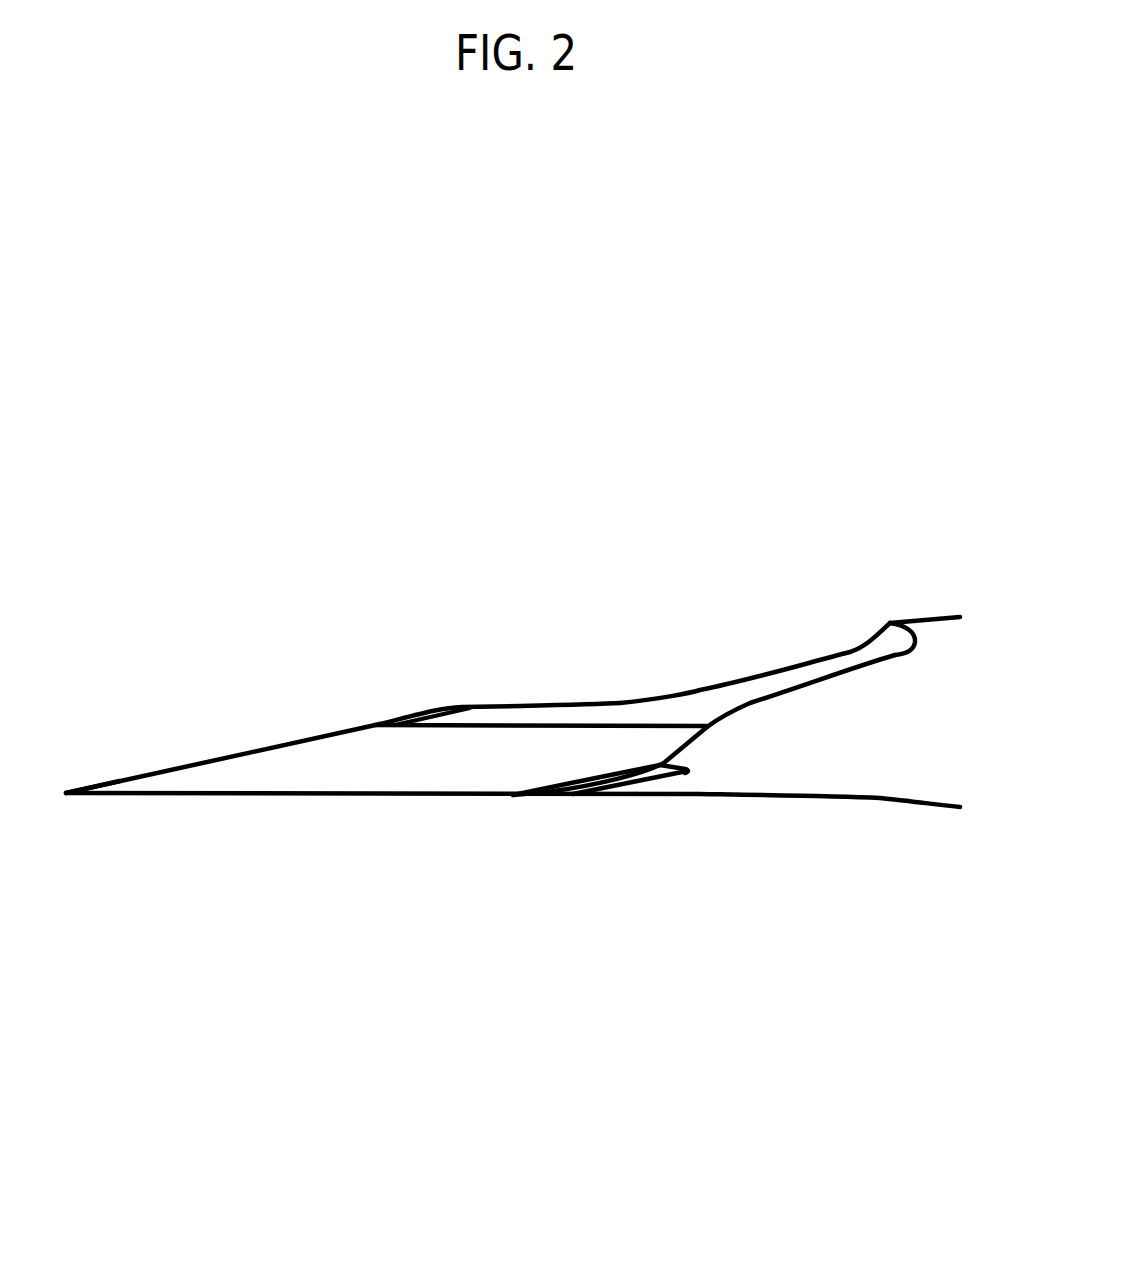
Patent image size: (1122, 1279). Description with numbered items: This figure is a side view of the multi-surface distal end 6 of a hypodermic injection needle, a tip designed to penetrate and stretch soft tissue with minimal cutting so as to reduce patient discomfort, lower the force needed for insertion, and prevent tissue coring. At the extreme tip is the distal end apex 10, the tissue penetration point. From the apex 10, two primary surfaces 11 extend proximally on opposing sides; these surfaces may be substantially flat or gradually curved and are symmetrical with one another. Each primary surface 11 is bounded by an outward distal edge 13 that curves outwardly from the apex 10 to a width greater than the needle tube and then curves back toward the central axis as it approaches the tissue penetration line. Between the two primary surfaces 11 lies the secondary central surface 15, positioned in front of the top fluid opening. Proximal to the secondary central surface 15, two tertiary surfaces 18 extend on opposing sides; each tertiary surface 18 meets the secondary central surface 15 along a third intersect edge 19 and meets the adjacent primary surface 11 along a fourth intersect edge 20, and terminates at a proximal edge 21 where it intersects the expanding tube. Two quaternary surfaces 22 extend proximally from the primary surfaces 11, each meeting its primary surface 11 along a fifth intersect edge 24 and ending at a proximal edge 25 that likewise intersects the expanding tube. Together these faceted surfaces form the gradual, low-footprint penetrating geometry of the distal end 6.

The multi-surface distal end 6 is at (463, 1022).
The distal end apex 10 is at (64, 800).
The primary surfaces 11 is at (288, 783).
The outward distal edges 13 is at (375, 800).
The secondary central surface 15 is at (415, 720).
The tertiary surfaces 18 is at (703, 703).
The third intersect edge 19 is at (453, 720).
The fourth intersect edge 20 is at (600, 720).
The proximal edges 21 is at (900, 647).
The quaternary surfaces 22 is at (642, 777).
The fifth intersect edge 24 is at (562, 783).
The proximal edges 25 is at (685, 775).